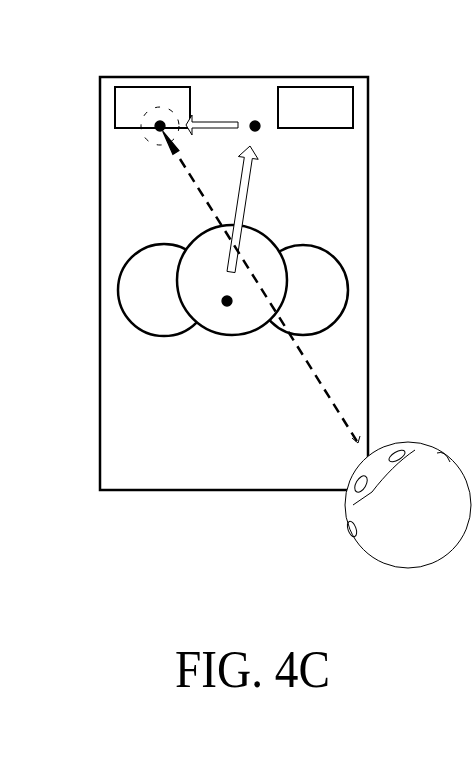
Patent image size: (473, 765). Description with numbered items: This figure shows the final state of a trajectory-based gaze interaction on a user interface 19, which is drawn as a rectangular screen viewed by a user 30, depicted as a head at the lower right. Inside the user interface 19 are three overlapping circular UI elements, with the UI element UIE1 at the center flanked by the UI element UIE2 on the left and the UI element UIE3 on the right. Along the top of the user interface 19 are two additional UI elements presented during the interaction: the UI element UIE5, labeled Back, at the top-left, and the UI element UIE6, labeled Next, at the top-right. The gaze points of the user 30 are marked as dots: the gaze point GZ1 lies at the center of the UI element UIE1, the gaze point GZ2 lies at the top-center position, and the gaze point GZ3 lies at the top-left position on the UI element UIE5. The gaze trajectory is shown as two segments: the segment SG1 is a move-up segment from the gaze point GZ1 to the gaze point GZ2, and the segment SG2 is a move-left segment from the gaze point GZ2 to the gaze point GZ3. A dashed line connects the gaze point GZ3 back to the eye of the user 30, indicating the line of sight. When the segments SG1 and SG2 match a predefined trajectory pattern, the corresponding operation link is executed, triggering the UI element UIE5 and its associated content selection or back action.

The user interface 19 is at (370, 152).
The user 30 is at (382, 543).
The UI element UIE1 is at (203, 243).
The UI element UIE2 is at (138, 275).
The UI element UIE3 is at (323, 262).
The UI element UIE5 is at (175, 87).
The UI element UIE6 is at (332, 87).
The gaze point GZ1 is at (223, 307).
The gaze point GZ2 is at (257, 112).
The gaze point GZ3 is at (146, 135).
The segment SG1 is at (243, 208).
The segment SG2 is at (217, 122).